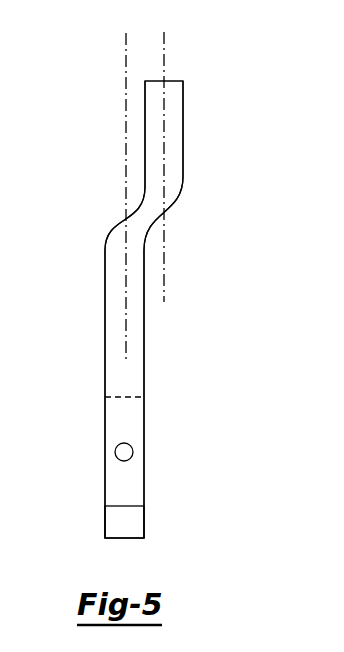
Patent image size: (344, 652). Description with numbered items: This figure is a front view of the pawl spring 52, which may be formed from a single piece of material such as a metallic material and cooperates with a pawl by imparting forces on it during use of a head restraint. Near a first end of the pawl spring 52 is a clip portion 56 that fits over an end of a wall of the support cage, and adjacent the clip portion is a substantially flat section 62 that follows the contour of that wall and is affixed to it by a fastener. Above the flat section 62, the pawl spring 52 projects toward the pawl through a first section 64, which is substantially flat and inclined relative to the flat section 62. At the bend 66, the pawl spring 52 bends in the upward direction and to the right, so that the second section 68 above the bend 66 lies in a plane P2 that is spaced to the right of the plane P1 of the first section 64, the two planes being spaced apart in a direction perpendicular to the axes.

The pawl spring 52 is at (100, 230).
The second section 68 is at (183, 128).
The bend 66 is at (152, 203).
The first section 64 is at (105, 310).
The flat section 62 is at (148, 447).
The clip portion 56 is at (158, 527).
The plane of the first section P1 is at (126, 87).
The plane of the second section P2 is at (164, 52).